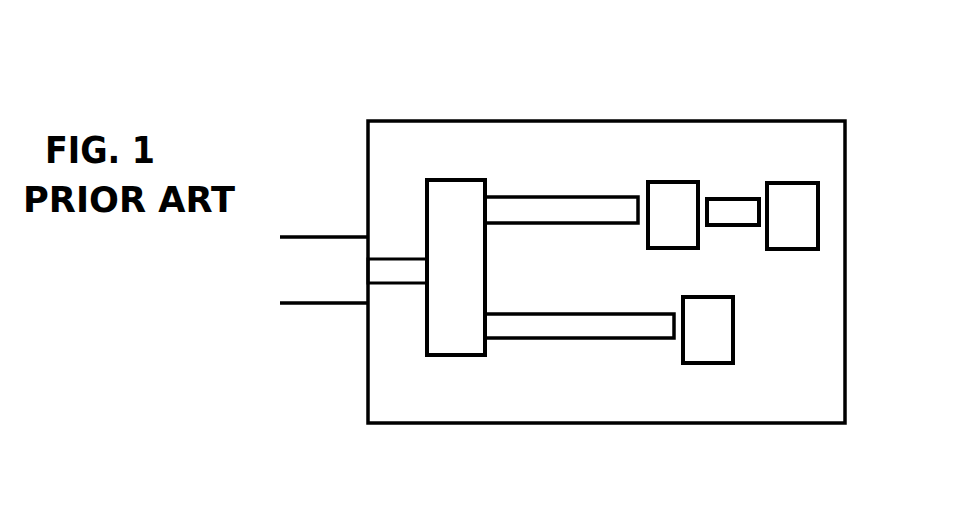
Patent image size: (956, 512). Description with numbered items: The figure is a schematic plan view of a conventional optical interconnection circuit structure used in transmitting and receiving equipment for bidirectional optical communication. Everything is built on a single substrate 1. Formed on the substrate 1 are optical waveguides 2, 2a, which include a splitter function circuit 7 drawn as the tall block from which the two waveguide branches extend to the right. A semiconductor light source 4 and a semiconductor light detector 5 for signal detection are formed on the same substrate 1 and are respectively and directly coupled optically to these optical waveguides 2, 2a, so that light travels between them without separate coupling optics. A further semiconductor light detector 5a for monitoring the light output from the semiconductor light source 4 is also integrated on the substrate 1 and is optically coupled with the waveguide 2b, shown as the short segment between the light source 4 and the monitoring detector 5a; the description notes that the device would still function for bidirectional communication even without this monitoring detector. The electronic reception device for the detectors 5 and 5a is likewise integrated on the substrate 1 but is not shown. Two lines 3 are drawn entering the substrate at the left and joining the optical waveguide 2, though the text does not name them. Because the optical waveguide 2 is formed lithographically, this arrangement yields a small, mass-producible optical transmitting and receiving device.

The substrate 1 is at (825, 122).
The optical waveguide 2 is at (383, 259).
The optical waveguide 2a is at (527, 197).
The waveguide 2b is at (727, 207).
The external leads 3 is at (325, 237).
The semiconductor light source 4 is at (663, 197).
The semiconductor light detector 5 is at (705, 337).
The semiconductor light detector 5a is at (793, 195).
The splitter function circuit 7 is at (445, 203).